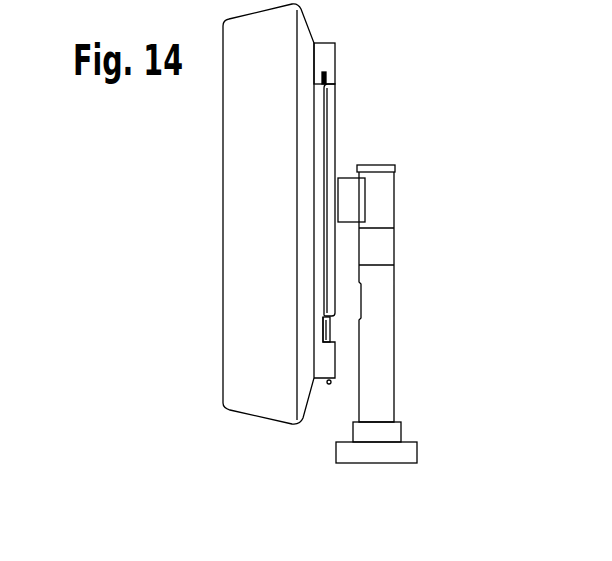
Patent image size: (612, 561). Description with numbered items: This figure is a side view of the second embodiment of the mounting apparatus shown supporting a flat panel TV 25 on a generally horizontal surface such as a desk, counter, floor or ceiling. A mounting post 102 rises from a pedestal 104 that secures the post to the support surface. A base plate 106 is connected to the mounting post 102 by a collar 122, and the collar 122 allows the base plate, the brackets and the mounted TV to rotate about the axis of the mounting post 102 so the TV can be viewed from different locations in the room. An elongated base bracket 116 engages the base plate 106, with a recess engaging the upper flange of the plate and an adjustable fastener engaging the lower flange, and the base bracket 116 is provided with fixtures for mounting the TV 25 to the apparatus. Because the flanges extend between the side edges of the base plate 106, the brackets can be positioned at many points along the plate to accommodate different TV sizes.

The flat panel TV 25 is at (265, 289).
The base bracket 116 is at (326, 57).
The base plate 106 is at (339, 98).
The collar 122 is at (387, 216).
The mounting post 102 is at (382, 355).
The pedestal 104 is at (403, 448).